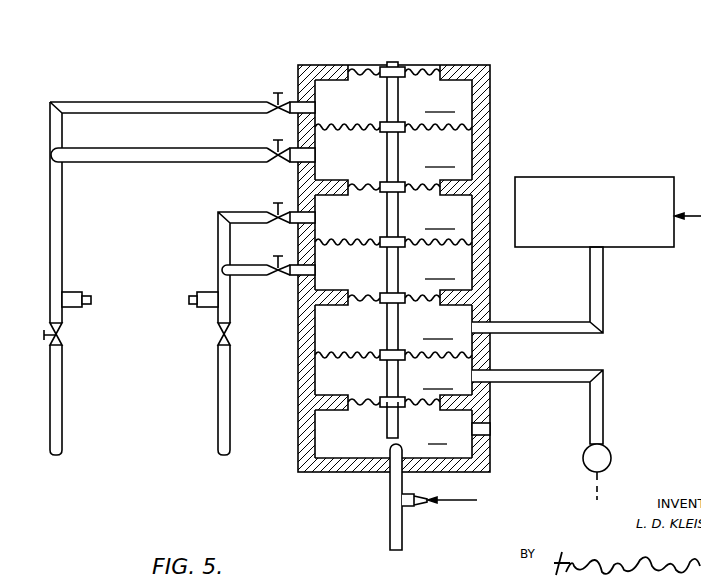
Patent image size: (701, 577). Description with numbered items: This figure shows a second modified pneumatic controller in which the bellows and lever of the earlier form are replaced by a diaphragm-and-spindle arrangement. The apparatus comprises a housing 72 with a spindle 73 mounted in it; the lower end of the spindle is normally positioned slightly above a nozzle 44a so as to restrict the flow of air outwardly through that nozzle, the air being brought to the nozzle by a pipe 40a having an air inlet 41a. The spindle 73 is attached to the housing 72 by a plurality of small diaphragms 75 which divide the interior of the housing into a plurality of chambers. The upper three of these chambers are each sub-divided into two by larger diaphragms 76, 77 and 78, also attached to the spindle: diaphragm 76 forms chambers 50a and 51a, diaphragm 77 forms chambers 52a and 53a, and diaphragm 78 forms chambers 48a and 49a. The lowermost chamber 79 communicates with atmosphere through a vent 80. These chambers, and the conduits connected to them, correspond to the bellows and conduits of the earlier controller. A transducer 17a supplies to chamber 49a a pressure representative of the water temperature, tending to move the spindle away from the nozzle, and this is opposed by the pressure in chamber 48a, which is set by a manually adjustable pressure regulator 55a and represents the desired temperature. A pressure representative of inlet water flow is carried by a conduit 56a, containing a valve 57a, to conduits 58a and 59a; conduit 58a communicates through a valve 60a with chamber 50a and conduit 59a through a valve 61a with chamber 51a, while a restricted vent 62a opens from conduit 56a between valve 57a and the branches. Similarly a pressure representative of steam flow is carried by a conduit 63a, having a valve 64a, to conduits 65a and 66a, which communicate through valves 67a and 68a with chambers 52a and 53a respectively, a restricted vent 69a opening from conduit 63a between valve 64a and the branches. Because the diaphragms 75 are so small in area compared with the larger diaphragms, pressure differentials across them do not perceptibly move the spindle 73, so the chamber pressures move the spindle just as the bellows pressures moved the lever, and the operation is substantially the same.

The housing 72 is at (492, 110).
The spindle 73 is at (393, 63).
The diaphragms 75 is at (360, 70).
The diaphragm 76 is at (366, 125).
The diaphragm 77 is at (364, 240).
The diaphragm 78 is at (365, 353).
The lowermost chamber 79 is at (437, 434).
The vent 80 is at (490, 432).
The nozzle 44a is at (390, 450).
The air supply pipe 40a is at (390, 522).
The air inlet fitting 41a is at (426, 505).
The chamber 50a is at (439, 102).
The chamber 51a is at (439, 157).
The chamber 52a is at (439, 219).
The chamber 53a is at (439, 269).
The chamber 48a is at (512, 293).
The chamber 49a is at (512, 407).
The pressure regulator 55a is at (614, 183).
The transducer 17a is at (605, 452).
The conduit 56a is at (64, 412).
The valve 57a is at (65, 339).
The conduit 58a is at (116, 102).
The conduit 59a is at (112, 148).
The valve 60a is at (282, 98).
The valve 61a is at (283, 146).
The restricted vent 62a is at (86, 292).
The conduit 63a is at (222, 388).
The valve 64a is at (232, 337).
The conduit 65a is at (232, 212).
The conduit 66a is at (250, 276).
The valve 67a is at (283, 208).
The valve 68a is at (283, 260).
The restricted vent 69a is at (193, 292).